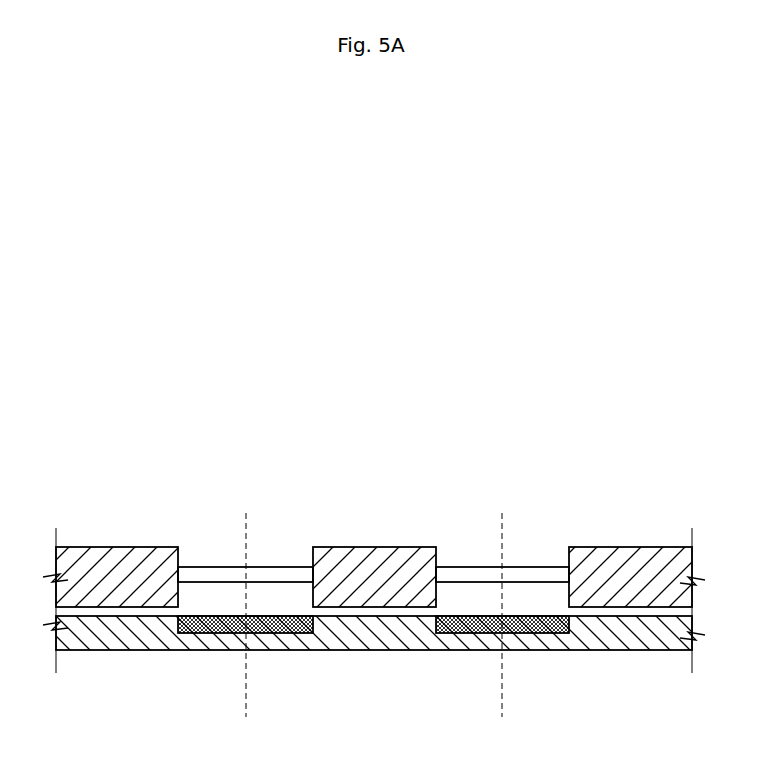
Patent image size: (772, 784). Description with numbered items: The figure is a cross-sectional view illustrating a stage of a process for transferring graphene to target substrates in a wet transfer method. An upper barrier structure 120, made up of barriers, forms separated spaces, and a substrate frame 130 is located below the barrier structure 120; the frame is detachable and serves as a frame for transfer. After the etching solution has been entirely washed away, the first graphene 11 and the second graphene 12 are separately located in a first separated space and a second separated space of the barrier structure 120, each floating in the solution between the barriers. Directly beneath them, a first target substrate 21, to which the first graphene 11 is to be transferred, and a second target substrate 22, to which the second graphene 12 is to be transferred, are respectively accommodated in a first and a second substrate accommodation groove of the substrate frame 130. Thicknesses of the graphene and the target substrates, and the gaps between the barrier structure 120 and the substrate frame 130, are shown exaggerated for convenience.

The barrier structure 120 is at (108, 552).
The first graphene 11 is at (278, 567).
The second graphene 12 is at (550, 575).
The substrate frame 130 is at (83, 650).
The first target substrate 21 is at (220, 633).
The second target substrate 22 is at (547, 633).